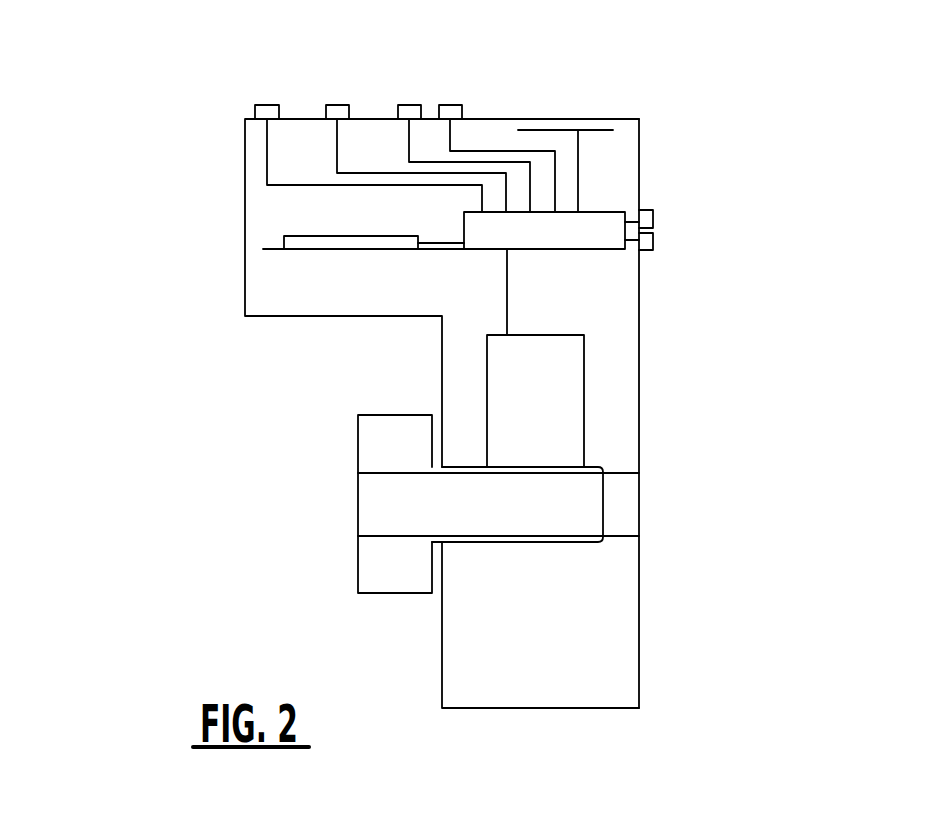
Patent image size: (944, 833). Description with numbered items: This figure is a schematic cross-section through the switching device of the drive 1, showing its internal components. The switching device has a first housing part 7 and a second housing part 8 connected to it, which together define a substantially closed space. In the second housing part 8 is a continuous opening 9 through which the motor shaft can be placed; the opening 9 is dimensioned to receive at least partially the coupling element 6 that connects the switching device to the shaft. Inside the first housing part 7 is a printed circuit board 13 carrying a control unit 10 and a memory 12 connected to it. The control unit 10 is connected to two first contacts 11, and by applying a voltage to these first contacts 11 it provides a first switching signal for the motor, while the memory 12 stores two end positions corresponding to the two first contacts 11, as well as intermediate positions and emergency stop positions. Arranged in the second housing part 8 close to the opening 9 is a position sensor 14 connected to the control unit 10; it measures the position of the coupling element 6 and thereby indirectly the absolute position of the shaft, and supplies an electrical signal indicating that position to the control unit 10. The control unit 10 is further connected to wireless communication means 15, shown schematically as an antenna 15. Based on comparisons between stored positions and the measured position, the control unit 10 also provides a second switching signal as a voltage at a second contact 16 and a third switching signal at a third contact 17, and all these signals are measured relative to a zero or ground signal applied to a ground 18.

The drive 1 is at (112, 143).
The coupling element 6 is at (383, 575).
The first housing part 7 is at (262, 222).
The second housing part 8 is at (617, 640).
The continuous opening 9 is at (684, 478).
The control unit 10 is at (597, 233).
The first contacts 11 is at (407, 108).
The memory 12 is at (332, 243).
The printed circuit board 13 is at (443, 248).
The position sensor 14 is at (563, 385).
The wireless communication means 15 is at (550, 130).
The second contact 16 is at (262, 105).
The third contact 17 is at (647, 218).
The ground 18 is at (650, 243).